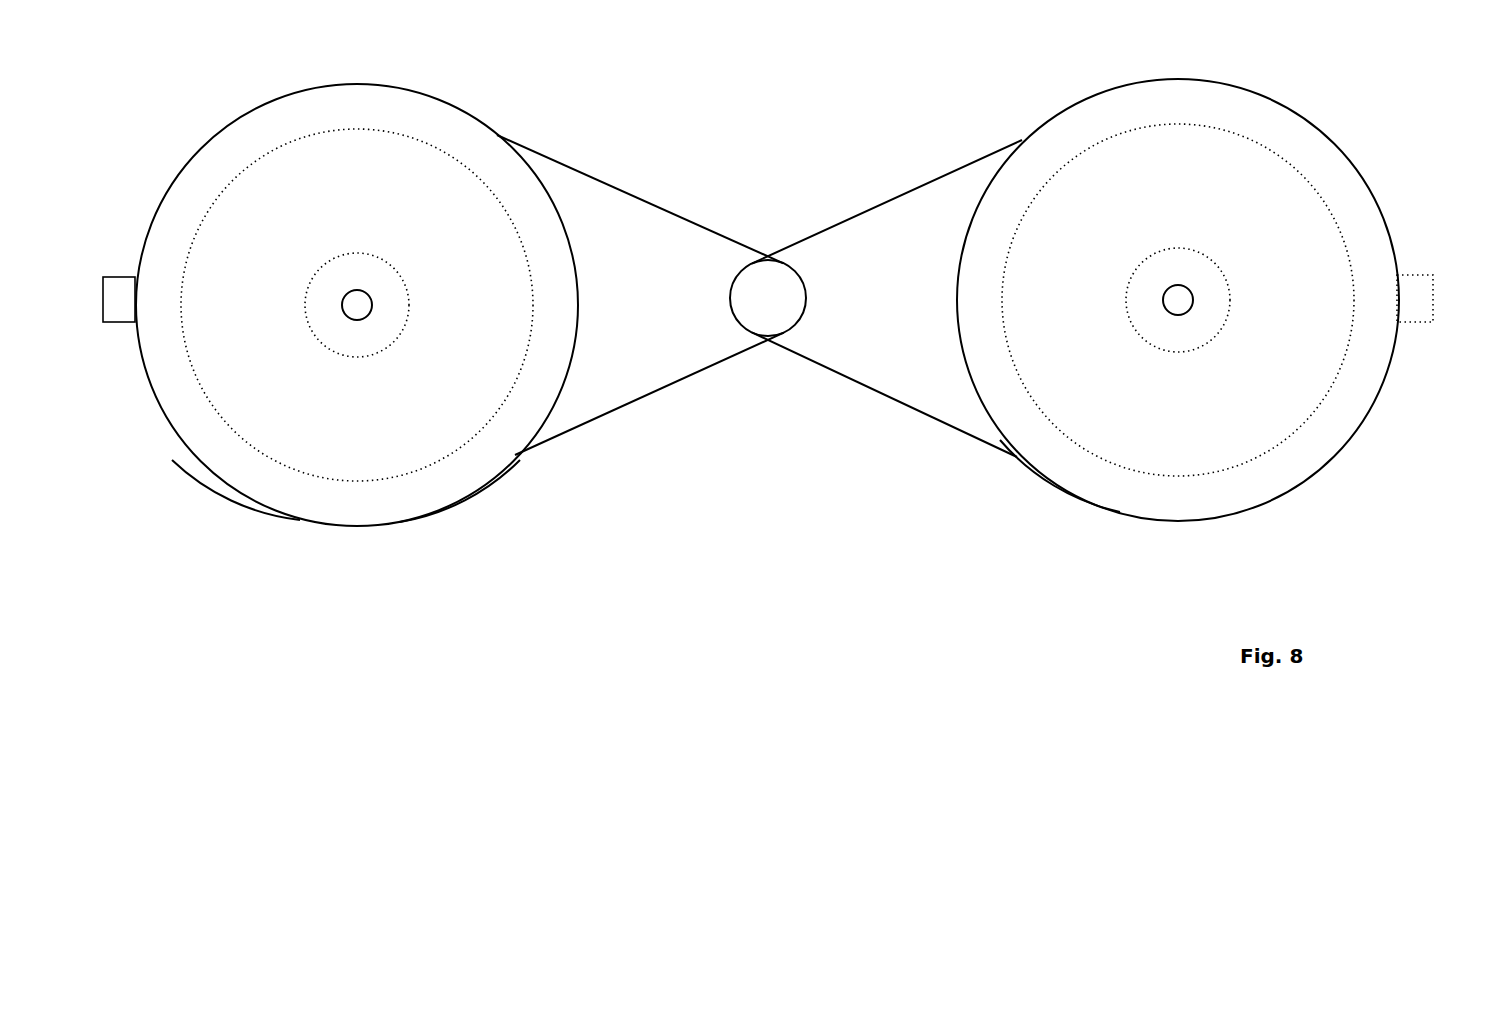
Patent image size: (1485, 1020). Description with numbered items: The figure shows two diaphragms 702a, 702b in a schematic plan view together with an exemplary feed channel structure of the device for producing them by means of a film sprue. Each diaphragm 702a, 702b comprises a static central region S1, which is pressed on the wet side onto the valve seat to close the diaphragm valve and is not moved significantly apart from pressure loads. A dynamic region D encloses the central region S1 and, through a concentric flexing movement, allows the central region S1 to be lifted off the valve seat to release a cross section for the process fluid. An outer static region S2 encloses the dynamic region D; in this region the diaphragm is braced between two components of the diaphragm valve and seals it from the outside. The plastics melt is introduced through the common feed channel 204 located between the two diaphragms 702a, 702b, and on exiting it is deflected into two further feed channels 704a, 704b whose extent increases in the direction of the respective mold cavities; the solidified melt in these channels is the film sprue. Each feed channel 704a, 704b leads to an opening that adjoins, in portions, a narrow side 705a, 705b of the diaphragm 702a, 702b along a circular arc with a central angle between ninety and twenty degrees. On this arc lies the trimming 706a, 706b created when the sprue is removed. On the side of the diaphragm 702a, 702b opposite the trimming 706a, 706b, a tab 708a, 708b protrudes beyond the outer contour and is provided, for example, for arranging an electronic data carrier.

The diaphragm 702a is at (220, 163).
The diaphragm 702b is at (1051, 155).
The feed channel 704a is at (630, 186).
The feed channel 704b is at (905, 186).
The trimming 706a is at (564, 398).
The trimming 706b is at (970, 399).
The narrow side 705a is at (480, 494).
The narrow side 705b is at (1033, 481).
The tab 708a is at (119, 282).
The tab 708b is at (1417, 282).
The common feed channel 204 is at (788, 309).
The static central region S1 is at (356, 348).
The static region S2 is at (253, 484).
The dynamic region D is at (300, 412).